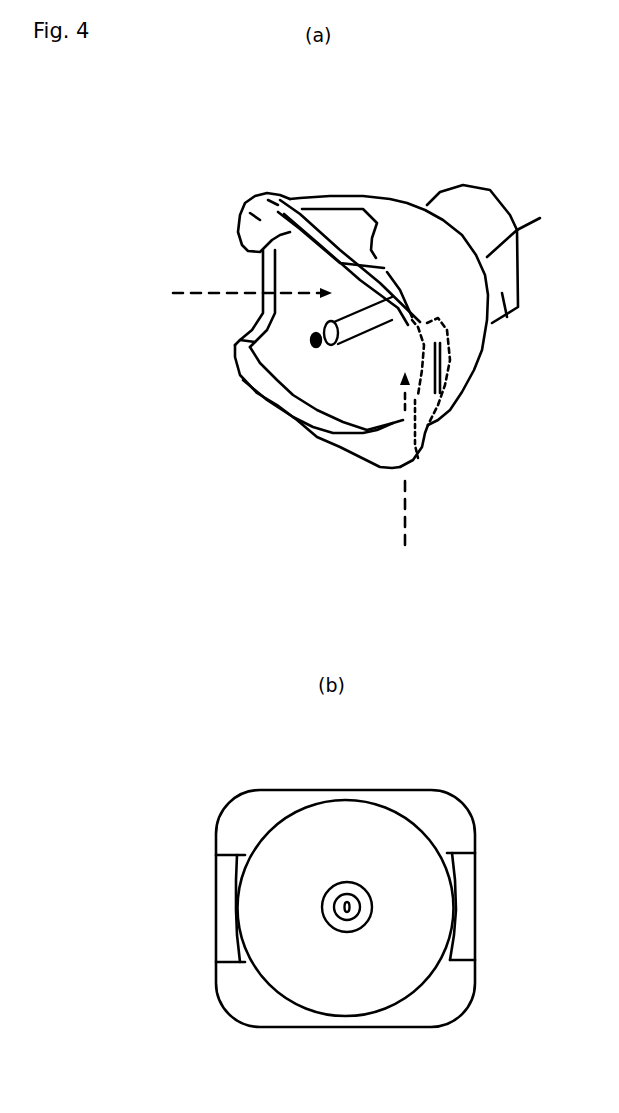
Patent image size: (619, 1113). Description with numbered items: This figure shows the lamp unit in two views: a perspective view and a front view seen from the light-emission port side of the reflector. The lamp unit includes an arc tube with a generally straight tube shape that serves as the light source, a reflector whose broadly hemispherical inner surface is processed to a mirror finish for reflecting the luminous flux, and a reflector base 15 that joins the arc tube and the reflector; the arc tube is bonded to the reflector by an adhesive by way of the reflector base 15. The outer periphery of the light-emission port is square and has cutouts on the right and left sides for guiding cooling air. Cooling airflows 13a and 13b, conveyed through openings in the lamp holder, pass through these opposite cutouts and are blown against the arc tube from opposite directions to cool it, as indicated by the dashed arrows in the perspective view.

The cooling airflow 13a is at (408, 510).
The cooling airflow 13b is at (232, 293).
The reflector base 15 is at (507, 313).